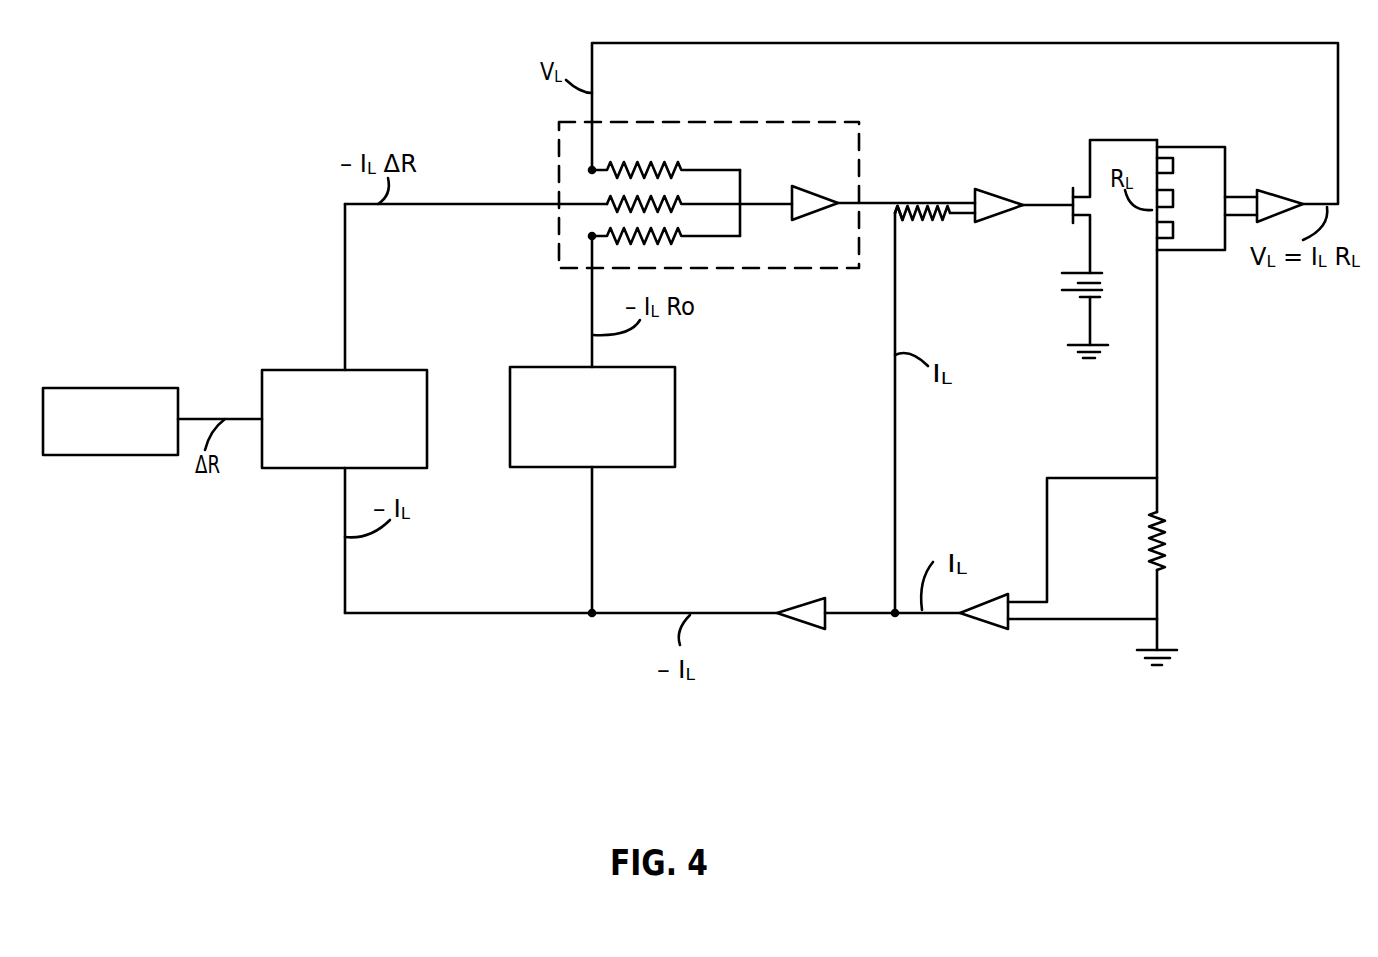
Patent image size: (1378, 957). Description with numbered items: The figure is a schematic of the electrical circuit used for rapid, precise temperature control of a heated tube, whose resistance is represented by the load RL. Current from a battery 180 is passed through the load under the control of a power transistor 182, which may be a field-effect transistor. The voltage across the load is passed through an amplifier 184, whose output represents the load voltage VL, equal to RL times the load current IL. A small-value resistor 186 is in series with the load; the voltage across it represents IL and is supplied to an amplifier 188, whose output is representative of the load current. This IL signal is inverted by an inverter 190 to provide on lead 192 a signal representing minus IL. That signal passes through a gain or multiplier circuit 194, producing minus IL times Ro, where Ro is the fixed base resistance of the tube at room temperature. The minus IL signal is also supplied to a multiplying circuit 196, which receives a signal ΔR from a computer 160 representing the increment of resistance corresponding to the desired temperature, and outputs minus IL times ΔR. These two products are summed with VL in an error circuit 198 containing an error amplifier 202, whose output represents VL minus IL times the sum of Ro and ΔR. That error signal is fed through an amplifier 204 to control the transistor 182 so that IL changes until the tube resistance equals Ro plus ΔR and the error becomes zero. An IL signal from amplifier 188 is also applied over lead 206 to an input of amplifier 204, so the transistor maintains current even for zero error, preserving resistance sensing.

The computer 160 is at (137, 388).
The multiplying circuit 196 is at (302, 370).
The gain or multiplier circuit 194 is at (517, 367).
The error circuit 198 is at (558, 166).
The error amplifier 202 is at (824, 192).
The amplifier 204 is at (1000, 190).
The power transistor 182 is at (1068, 200).
The amplifier 184 is at (1293, 176).
The battery 180 is at (1066, 288).
The resistor 186 is at (1163, 530).
The amplifier 188 is at (988, 628).
The inverter 190 is at (798, 629).
The lead 192 is at (610, 613).
The lead 206 is at (895, 496).